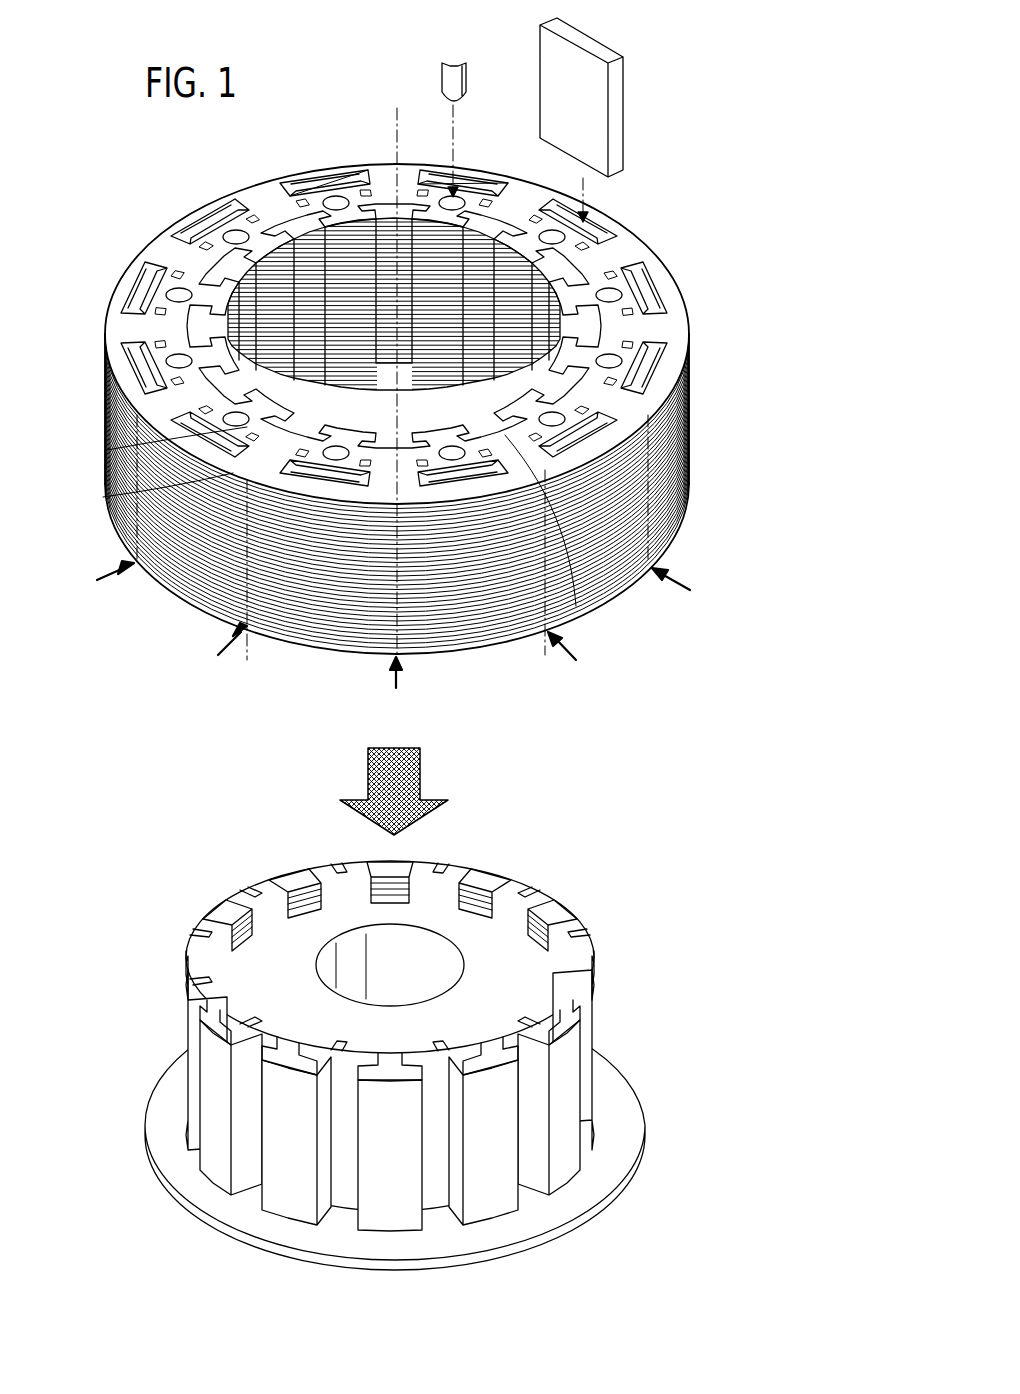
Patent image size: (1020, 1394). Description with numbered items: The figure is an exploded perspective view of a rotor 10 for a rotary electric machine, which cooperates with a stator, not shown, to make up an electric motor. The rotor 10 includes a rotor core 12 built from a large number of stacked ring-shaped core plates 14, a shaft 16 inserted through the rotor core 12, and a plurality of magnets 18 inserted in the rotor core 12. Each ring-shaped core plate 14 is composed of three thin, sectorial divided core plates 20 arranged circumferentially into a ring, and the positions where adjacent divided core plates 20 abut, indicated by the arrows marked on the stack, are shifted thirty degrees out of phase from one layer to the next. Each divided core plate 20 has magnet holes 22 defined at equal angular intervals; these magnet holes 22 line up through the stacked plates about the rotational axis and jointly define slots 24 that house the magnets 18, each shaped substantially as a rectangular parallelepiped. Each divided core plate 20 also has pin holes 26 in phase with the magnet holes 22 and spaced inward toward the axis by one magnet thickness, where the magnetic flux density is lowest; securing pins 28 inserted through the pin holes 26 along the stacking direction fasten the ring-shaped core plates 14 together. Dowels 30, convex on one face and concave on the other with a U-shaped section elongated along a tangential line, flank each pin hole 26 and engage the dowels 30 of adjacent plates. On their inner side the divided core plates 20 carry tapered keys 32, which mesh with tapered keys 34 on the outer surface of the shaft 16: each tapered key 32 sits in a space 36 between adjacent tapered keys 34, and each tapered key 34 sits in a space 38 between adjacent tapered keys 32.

The rotor 10 is at (176, 135).
The rotor core 12 is at (701, 351).
The ring-shaped core plate 14 is at (110, 286).
The shaft 16 is at (577, 907).
The magnet 18 is at (618, 126).
The divided core plate 20 is at (276, 185).
The magnet hole 22 is at (314, 180).
The slot 24 is at (338, 178).
The pin hole 26 is at (342, 196).
The securing pin 28 is at (463, 88).
The dowel 30 is at (606, 388).
The tapered key 32 is at (498, 384).
The tapered key 34 is at (484, 880).
The space 36 is at (250, 888).
The space 38 is at (108, 493).